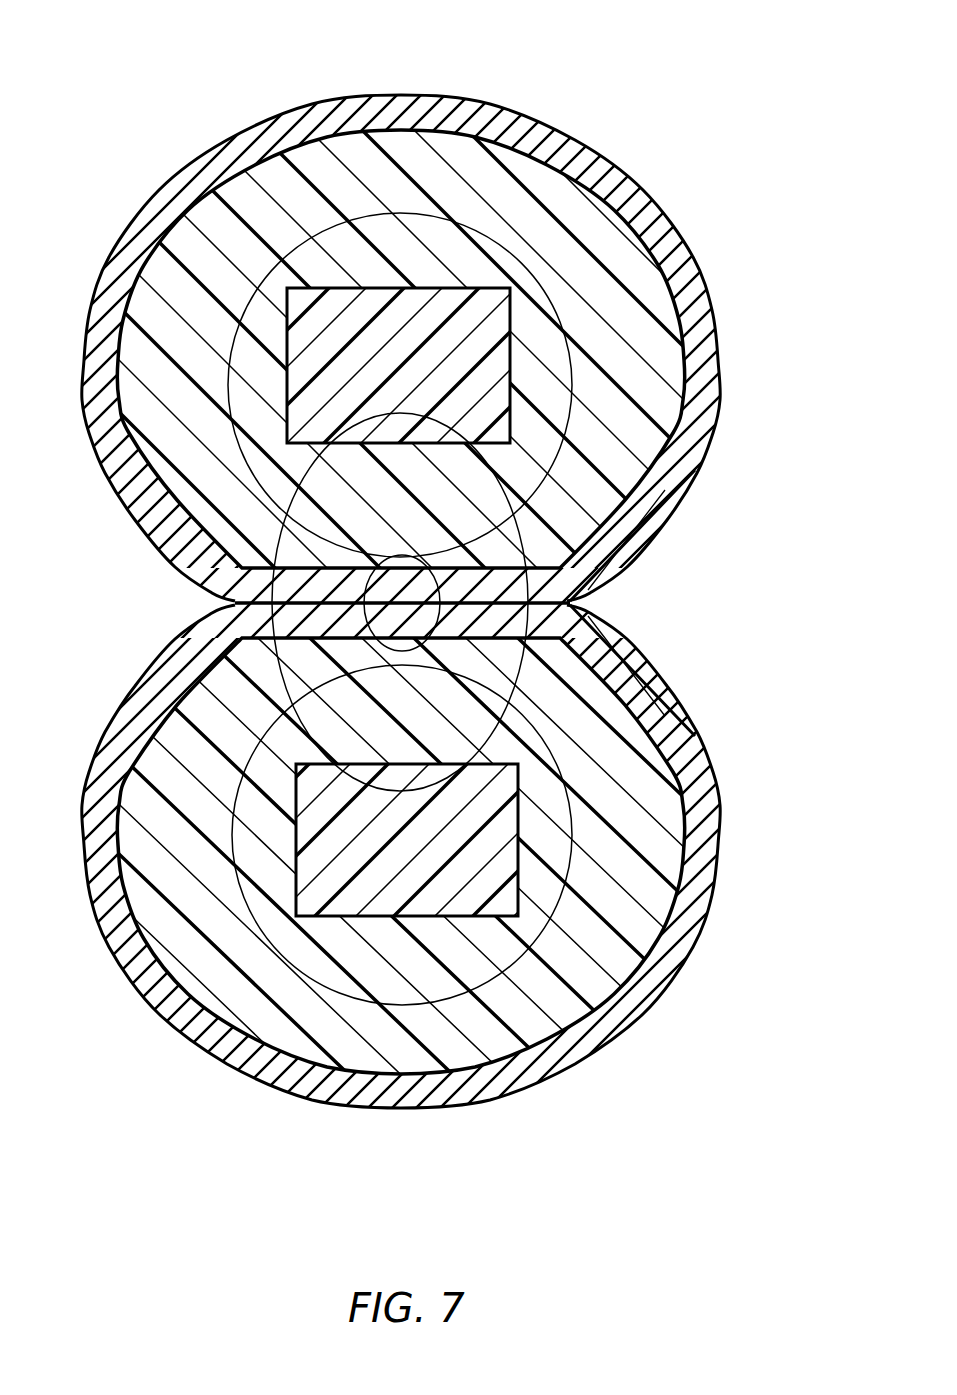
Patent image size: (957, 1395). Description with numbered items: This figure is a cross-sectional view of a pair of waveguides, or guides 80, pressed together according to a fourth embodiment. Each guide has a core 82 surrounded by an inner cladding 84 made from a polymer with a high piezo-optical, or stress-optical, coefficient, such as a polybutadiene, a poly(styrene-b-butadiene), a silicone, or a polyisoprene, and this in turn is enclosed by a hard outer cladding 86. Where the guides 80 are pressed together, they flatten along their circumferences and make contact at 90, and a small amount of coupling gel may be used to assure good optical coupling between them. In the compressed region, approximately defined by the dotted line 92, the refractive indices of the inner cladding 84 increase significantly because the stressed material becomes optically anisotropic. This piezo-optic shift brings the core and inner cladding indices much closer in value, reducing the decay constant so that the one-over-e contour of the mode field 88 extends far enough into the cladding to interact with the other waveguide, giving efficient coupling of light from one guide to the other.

The guides 80 is at (690, 158).
The cores 82 is at (386, 381).
The inner cladding 84 is at (198, 250).
The hard outer cladding 86 is at (518, 93).
The mode field 88 is at (132, 314).
The contact 90 is at (568, 597).
The dotted line 92 is at (265, 512).